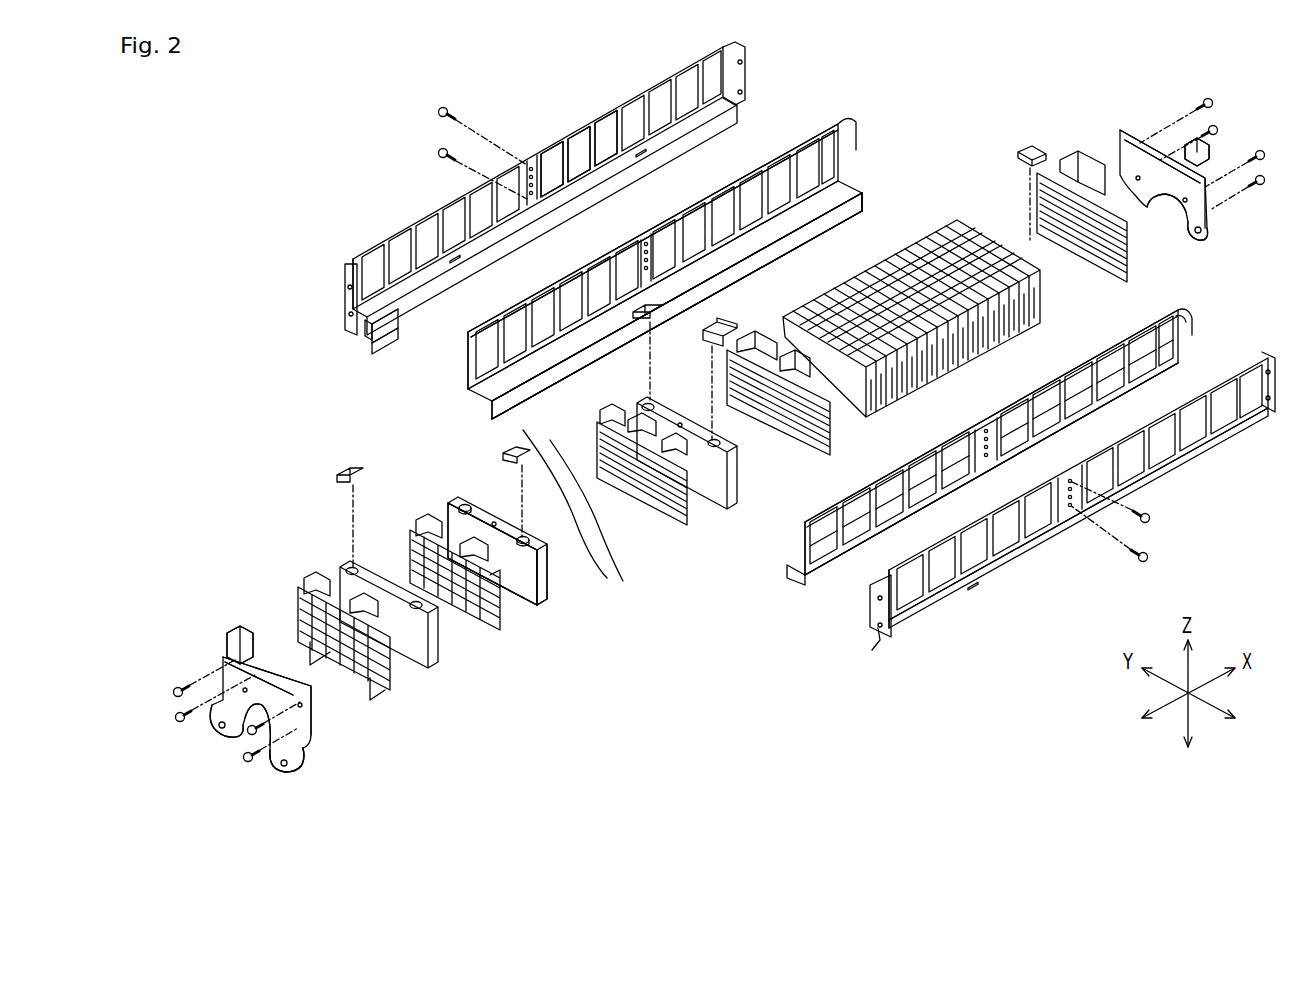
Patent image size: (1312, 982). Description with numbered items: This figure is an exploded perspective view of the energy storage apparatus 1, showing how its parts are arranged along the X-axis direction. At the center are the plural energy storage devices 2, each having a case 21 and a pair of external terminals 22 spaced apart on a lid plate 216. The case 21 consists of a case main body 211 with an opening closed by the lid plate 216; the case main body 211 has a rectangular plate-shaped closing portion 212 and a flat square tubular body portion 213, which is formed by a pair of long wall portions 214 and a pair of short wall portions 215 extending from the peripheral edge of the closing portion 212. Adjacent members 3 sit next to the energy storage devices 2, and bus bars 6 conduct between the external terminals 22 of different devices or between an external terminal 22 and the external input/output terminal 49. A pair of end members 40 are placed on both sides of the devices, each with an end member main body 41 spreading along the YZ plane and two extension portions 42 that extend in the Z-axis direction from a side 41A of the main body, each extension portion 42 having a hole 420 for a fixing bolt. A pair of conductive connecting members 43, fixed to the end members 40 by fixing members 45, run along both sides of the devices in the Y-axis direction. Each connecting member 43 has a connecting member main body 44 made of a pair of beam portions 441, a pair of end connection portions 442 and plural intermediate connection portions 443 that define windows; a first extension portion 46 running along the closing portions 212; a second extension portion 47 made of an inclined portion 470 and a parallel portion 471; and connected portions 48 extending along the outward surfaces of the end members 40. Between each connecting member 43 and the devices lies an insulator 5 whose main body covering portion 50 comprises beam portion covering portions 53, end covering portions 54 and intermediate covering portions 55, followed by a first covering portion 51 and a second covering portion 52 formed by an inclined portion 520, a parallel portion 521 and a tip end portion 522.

The energy storage apparatus 1 is at (313, 192).
The energy storage device 2 is at (882, 408).
The adjacent member 3 is at (1050, 175).
The insulator 5 is at (455, 344).
The bus bar 6 is at (1025, 150).
The case 21 is at (662, 595).
The external terminal 22 is at (466, 503).
The end member 40 is at (1250, 240).
The end member main body 41 is at (312, 730).
The side of the end member main body 41A is at (240, 725).
The extension portion 42 is at (305, 752).
The connecting member 43 is at (340, 270).
The connecting member main body 44 is at (620, 88).
The fixing member 45 is at (1258, 178).
The first extension portion 46 is at (368, 327).
The second extension portion 47 is at (310, 362).
The connected portion 48 is at (730, 90).
The external input/output terminal 49 is at (240, 632).
The main body covering portion 50 is at (923, 92).
The first covering portion 51 is at (486, 404).
The second covering portion 52 is at (938, 170).
The beam portion covering portion 53 is at (845, 130).
The end covering portion 54 is at (840, 120).
The intermediate covering portion 55 is at (842, 150).
The case main body 211 is at (626, 630).
The closing portion 212 is at (510, 600).
The body portion 213 is at (588, 600).
The long wall portion 214 is at (522, 588).
The short wall portion 215 is at (538, 578).
The lid plate 216 is at (612, 582).
The hole 420 is at (218, 730).
The beam portion 441 is at (597, 150).
The end connection portion 442 is at (643, 140).
The intermediate connection portion 443 is at (570, 170).
The inclined portion 470 is at (375, 347).
The parallel portion 471 is at (395, 340).
The inclined portion 520 is at (860, 190).
The parallel portion 521 is at (862, 203).
The tip end portion 522 is at (856, 224).